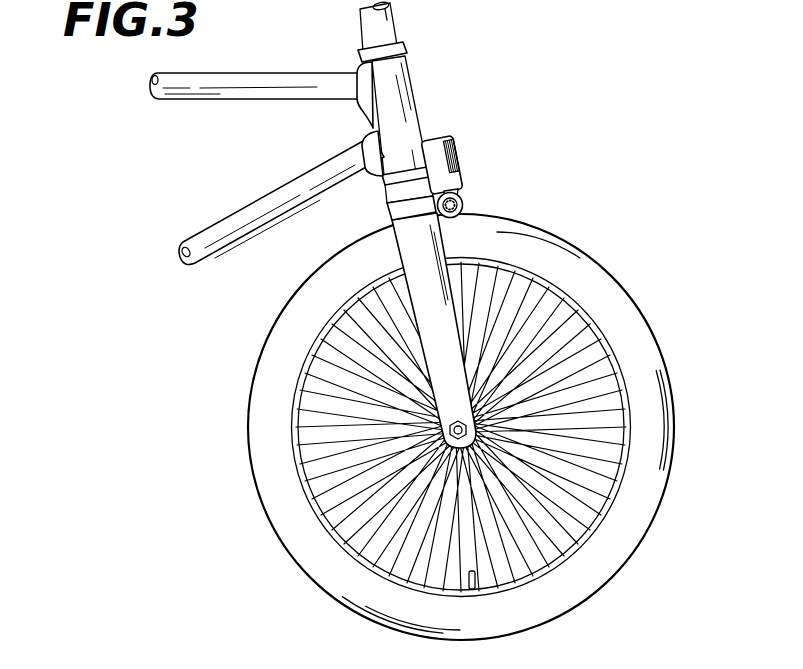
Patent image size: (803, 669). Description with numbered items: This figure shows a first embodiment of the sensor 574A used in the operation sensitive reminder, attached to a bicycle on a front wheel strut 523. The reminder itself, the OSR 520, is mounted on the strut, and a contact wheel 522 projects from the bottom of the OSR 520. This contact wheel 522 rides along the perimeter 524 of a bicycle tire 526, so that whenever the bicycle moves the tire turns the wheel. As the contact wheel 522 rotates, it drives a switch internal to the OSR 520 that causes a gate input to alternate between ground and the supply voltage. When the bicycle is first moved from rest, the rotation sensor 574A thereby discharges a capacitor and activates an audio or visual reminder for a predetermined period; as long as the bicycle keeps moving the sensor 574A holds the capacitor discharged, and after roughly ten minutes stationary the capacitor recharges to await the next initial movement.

The OSR 520 is at (487, 154).
The contact wheel 522 is at (465, 207).
The front wheel strut 523 is at (405, 128).
The perimeter 524 is at (596, 265).
The bicycle tire 526 is at (637, 353).
The rotation sensor 574A is at (476, 197).